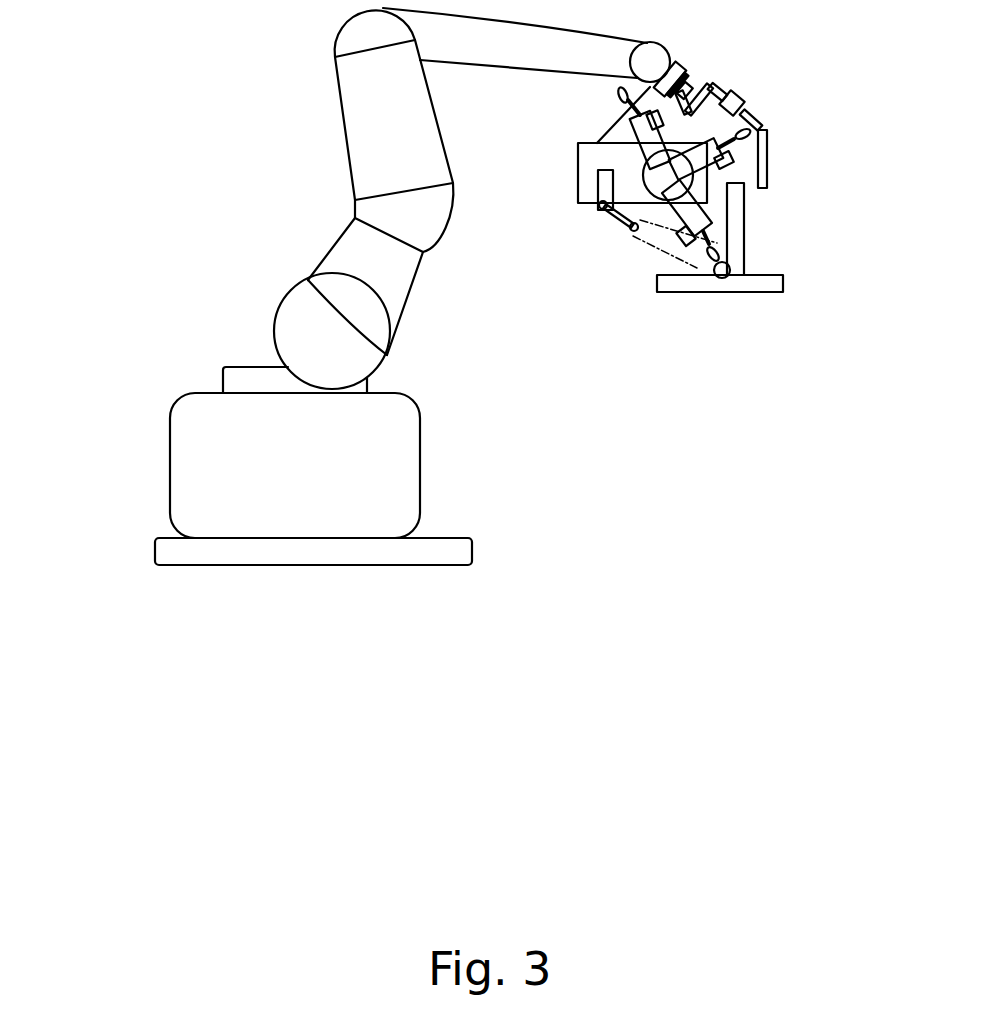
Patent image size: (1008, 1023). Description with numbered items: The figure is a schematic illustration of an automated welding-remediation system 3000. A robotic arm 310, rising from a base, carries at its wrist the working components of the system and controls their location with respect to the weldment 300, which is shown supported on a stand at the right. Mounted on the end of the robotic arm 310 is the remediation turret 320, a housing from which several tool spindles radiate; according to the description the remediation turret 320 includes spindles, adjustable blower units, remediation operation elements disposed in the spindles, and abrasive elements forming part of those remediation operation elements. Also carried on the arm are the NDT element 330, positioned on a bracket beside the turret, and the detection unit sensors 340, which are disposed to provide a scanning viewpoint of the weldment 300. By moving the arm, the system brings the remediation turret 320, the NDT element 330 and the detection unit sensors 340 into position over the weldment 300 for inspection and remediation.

The automated welding-remediation system 3000 is at (536, 640).
The weldment 300 is at (744, 243).
The robotic arm 310 is at (273, 332).
The remediation turret 320 is at (663, 175).
The NDT element 330 is at (741, 93).
The detection unit sensors 340 is at (623, 223).